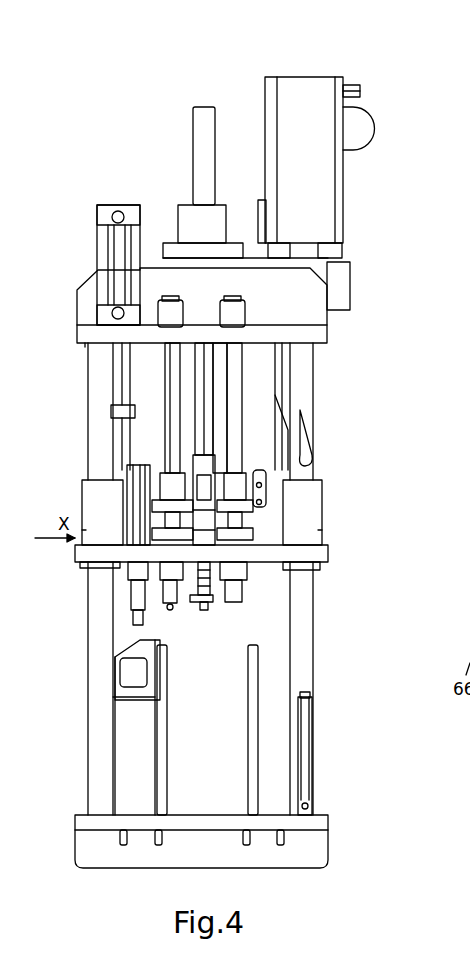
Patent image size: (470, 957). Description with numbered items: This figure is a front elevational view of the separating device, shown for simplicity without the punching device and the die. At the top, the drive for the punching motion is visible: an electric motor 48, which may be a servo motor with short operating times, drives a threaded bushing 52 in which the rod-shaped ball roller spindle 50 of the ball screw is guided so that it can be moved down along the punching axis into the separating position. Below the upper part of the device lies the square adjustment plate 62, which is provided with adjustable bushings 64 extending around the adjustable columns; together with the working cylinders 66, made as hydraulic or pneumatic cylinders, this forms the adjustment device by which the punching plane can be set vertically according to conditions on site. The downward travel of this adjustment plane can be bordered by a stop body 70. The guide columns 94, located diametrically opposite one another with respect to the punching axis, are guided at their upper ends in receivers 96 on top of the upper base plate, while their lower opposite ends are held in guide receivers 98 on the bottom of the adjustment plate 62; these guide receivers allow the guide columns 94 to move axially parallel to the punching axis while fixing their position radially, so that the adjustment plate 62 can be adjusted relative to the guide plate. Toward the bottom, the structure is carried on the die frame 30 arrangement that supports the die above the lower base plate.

The die frame 30 is at (250, 740).
The electric motor 48 is at (318, 178).
The ball roller spindle 50 is at (206, 118).
The threaded bushing 52 is at (197, 222).
The adjustment plate 62 is at (315, 550).
The adjustable bushings 64 is at (95, 500).
The working cylinders 66 is at (110, 238).
The stop body 70 is at (303, 736).
The guide columns 94 is at (170, 410).
The receivers 96 is at (222, 310).
The guide receivers 98 is at (173, 568).